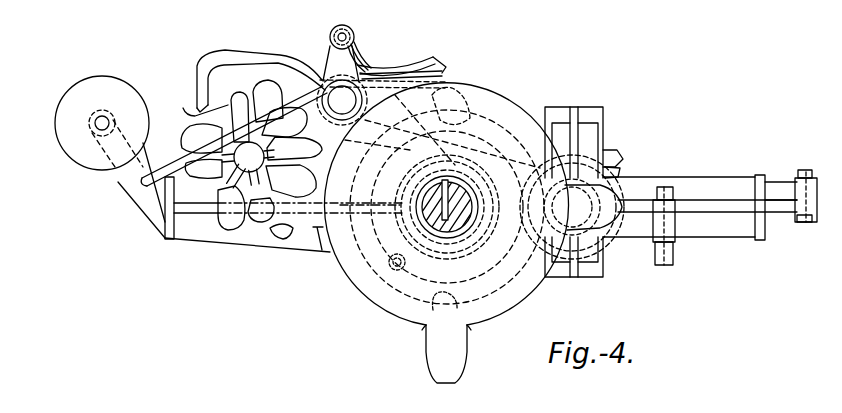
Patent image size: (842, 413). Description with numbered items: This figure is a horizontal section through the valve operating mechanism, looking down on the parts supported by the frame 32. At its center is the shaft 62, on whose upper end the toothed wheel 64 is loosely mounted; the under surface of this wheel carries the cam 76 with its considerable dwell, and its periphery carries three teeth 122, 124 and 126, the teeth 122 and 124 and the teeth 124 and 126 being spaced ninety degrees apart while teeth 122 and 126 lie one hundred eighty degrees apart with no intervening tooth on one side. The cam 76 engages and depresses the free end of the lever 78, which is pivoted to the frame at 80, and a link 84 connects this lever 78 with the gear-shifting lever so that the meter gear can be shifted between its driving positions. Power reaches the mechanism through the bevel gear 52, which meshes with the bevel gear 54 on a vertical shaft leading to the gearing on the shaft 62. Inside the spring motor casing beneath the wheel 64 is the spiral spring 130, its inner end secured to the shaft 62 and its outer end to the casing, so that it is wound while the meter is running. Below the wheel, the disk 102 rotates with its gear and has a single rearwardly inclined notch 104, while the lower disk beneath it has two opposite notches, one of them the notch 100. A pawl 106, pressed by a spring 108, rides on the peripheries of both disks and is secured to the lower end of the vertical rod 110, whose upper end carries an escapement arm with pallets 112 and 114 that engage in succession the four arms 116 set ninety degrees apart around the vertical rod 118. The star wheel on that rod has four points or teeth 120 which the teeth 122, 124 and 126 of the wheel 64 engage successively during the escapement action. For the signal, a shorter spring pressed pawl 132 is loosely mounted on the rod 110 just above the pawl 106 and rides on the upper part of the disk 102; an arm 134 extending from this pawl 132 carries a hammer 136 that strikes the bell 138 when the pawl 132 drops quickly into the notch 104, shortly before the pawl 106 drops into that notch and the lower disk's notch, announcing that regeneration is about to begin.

The frame 32 is at (763, 182).
The bevel gear 52 is at (620, 150).
The bevel gear 54 is at (620, 171).
The shaft 62 is at (438, 230).
The toothed wheel 64 is at (360, 297).
The cam 76 is at (548, 281).
The lever 78 is at (695, 208).
The pivot 80 is at (807, 222).
The link 84 is at (663, 235).
The inclined notch 100 is at (492, 332).
The disk 102 is at (537, 298).
The inclined notch 104 is at (465, 90).
The pawl 106 is at (457, 93).
The spring 108 is at (354, 40).
The vertical rod 110 is at (333, 93).
The pallet 112 is at (198, 88).
The pallet 114 is at (286, 240).
The arms 116 is at (183, 108).
The vertical rod 118 is at (200, 222).
The points or teeth 120 is at (259, 82).
The tooth 122 is at (318, 235).
The tooth 124 is at (457, 373).
The tooth 126 is at (615, 232).
The spiral spring 130 is at (525, 100).
The spring pressed pawl 132 is at (362, 70).
The arm 134 is at (163, 160).
The hammer 136 is at (136, 174).
The bell 138 is at (112, 87).